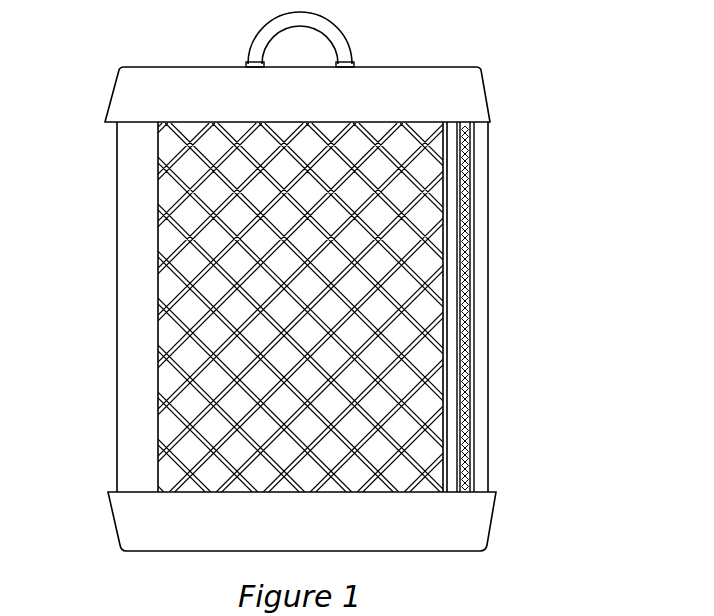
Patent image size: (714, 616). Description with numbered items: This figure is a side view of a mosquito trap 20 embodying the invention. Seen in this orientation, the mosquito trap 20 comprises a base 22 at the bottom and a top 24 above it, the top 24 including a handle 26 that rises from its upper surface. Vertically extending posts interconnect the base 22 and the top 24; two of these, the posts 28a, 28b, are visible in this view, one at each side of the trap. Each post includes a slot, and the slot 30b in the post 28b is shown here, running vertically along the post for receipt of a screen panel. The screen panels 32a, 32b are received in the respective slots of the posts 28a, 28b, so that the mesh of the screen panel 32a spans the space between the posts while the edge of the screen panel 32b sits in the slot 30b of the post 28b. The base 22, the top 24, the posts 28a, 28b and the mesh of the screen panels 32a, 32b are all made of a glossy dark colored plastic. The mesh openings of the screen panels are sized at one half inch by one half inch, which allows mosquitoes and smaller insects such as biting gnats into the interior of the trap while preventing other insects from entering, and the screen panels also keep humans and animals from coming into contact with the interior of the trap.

The mosquito trap 20 is at (212, 42).
The base 22 is at (138, 528).
The top 24 is at (410, 75).
The handle 26 is at (335, 40).
The post 28a is at (137, 200).
The post 28b is at (478, 290).
The slot 30b is at (470, 195).
The screen panel 32a is at (160, 268).
The screen panel 32b is at (465, 237).